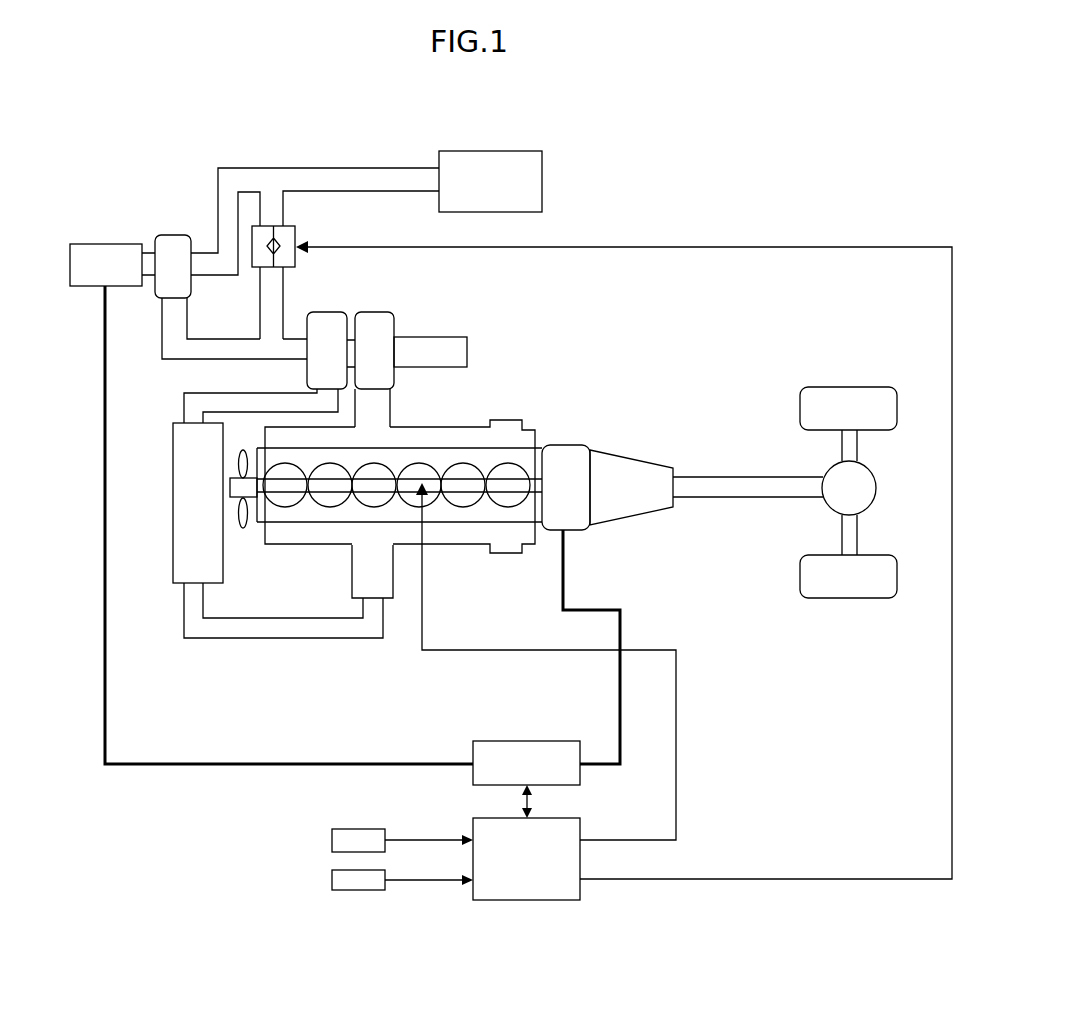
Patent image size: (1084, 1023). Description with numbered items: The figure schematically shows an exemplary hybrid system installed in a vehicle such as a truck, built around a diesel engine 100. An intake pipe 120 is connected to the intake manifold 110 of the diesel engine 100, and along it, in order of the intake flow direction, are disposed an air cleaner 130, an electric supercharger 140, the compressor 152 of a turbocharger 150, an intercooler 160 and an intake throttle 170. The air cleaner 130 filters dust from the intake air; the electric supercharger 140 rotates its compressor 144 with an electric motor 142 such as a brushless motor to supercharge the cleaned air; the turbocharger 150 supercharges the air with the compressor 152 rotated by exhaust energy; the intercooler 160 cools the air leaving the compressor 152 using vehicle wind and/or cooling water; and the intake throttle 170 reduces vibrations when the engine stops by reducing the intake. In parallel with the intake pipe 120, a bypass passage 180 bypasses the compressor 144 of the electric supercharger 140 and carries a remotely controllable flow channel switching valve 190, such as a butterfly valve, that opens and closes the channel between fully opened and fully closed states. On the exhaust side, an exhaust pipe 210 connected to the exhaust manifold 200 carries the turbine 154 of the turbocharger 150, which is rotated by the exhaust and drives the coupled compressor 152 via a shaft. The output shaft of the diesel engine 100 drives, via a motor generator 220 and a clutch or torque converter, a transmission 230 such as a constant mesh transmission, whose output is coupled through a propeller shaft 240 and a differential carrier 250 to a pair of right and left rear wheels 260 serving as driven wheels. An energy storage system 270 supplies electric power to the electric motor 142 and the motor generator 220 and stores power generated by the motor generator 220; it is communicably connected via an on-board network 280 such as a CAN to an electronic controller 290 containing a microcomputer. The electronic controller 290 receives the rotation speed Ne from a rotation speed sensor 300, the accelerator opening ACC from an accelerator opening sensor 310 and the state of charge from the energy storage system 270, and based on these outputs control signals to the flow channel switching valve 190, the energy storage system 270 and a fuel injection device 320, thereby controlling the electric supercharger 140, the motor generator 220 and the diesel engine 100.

The diesel engine 100 is at (398, 460).
The intake manifold 110 is at (478, 550).
The intake pipe 120 is at (160, 352).
The air cleaner 130 is at (546, 160).
The electric supercharger 140 is at (103, 240).
The electric motor 142 is at (90, 288).
The compressor 144 is at (174, 235).
The turbocharger 150 is at (391, 323).
The compressor 152 is at (334, 312).
The turbine 154 is at (384, 312).
The intercooler 160 is at (172, 494).
The intake throttle 170 is at (350, 580).
The bypass passage 180 is at (260, 320).
The flow channel switching valve 190 is at (296, 233).
The exhaust manifold 200 is at (478, 427).
The exhaust pipe 210 is at (432, 367).
The motor generator 220 is at (566, 445).
The transmission 230 is at (620, 458).
The propeller shaft 240 is at (728, 477).
The differential carrier 250 is at (872, 474).
The rear wheels 260 is at (876, 388).
The energy storage system 270 is at (527, 741).
The on-board network 280 is at (535, 801).
The electronic controller 290 is at (582, 893).
The rotation speed sensor 300 is at (331, 836).
The accelerator opening sensor 310 is at (331, 878).
The fuel injection device 320 is at (488, 478).